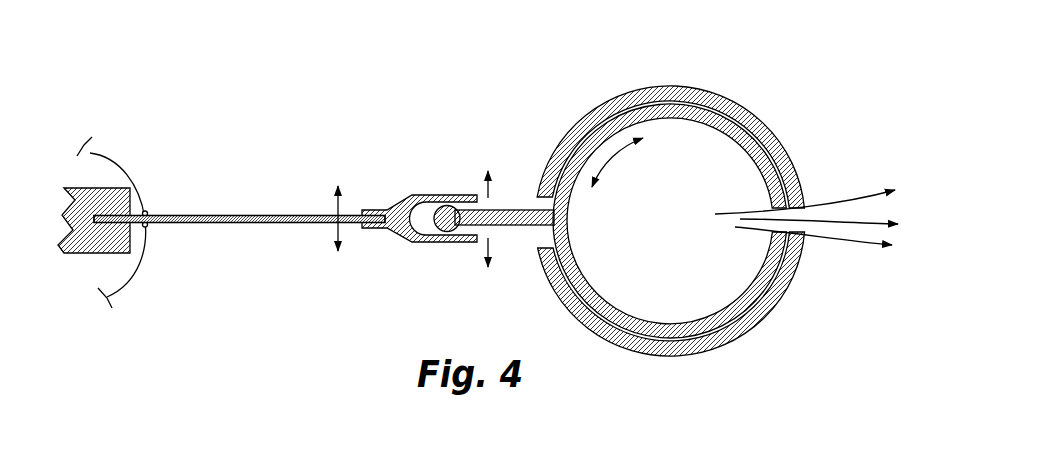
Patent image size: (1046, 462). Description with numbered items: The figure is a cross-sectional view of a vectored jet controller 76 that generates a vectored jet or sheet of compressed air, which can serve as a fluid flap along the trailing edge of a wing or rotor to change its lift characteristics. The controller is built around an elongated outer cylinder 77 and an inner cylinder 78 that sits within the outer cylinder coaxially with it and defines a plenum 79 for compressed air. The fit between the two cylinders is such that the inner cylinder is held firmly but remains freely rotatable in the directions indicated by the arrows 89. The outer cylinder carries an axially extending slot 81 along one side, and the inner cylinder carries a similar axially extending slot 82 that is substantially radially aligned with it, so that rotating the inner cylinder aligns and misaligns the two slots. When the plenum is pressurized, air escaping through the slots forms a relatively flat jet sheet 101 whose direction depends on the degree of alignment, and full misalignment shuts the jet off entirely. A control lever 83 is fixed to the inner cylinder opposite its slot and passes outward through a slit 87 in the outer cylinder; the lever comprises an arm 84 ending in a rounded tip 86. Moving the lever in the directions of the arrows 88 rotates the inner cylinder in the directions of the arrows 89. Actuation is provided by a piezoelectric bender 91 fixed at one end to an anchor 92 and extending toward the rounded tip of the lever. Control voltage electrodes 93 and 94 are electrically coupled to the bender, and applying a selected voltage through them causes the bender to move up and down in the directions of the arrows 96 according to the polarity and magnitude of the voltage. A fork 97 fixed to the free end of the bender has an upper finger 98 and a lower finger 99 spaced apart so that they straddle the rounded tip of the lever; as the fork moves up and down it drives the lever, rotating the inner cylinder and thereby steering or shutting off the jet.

The vectored jet controller 76 is at (362, 92).
The outer cylinder 77 is at (652, 90).
The inner cylinder 78 is at (704, 116).
The plenum 79 is at (715, 158).
The slot 81 is at (800, 258).
The slot 82 is at (797, 182).
The control lever 83 is at (515, 200).
The arm 84 is at (502, 226).
The rounded tip 86 is at (438, 226).
The slit 87 is at (543, 237).
The arrows 88 is at (490, 194).
The arrows 89 is at (614, 160).
The piezoelectric bender 91 is at (262, 224).
The anchor 92 is at (80, 253).
The control voltage electrode 93 is at (132, 172).
The control voltage electrode 94 is at (132, 272).
The arrows 96 is at (337, 205).
The fork 97 is at (405, 188).
The upper finger 98 is at (444, 179).
The lower finger 99 is at (452, 243).
The jet sheet 101 is at (850, 244).